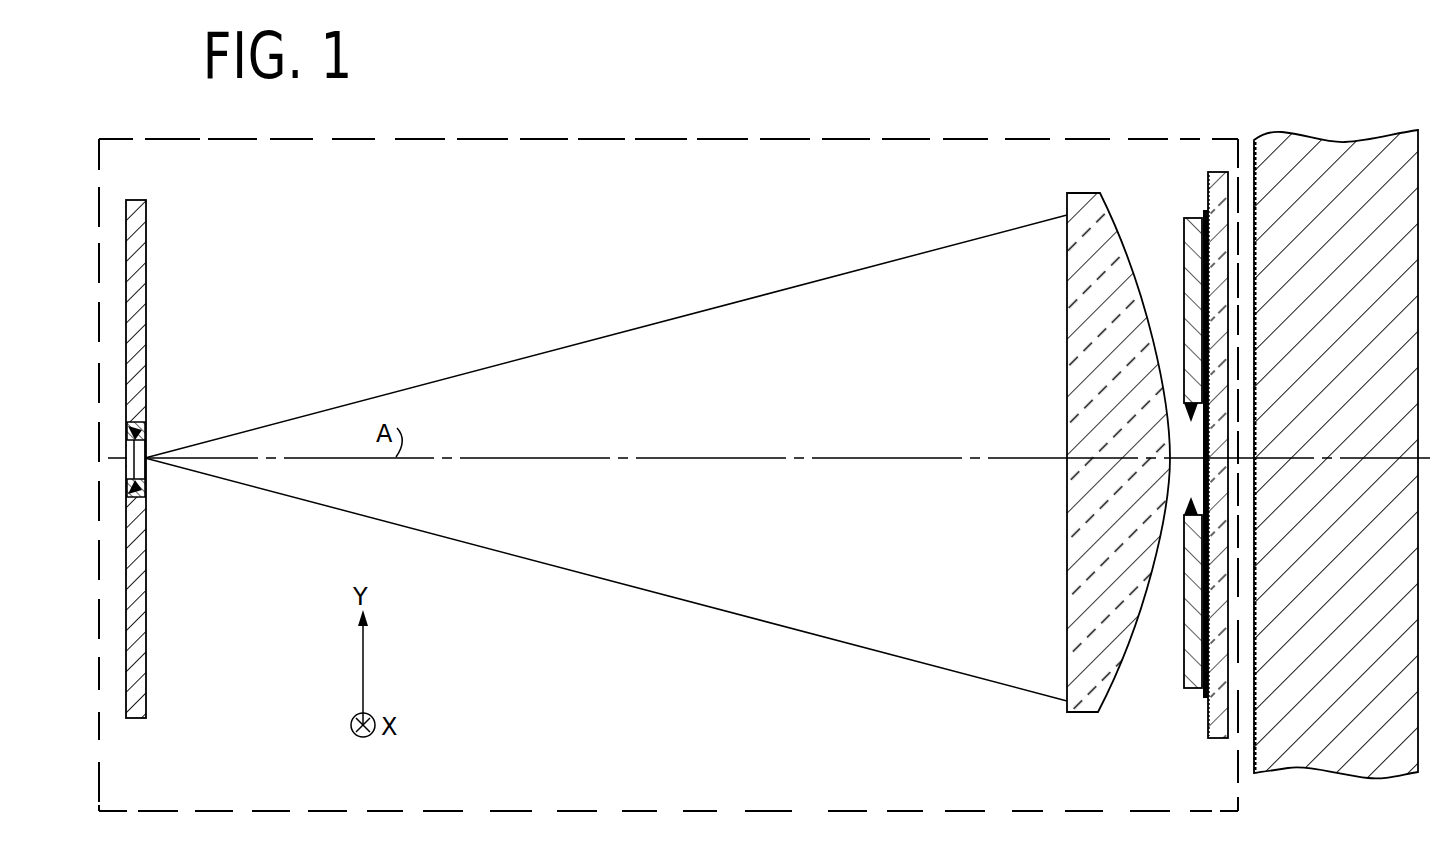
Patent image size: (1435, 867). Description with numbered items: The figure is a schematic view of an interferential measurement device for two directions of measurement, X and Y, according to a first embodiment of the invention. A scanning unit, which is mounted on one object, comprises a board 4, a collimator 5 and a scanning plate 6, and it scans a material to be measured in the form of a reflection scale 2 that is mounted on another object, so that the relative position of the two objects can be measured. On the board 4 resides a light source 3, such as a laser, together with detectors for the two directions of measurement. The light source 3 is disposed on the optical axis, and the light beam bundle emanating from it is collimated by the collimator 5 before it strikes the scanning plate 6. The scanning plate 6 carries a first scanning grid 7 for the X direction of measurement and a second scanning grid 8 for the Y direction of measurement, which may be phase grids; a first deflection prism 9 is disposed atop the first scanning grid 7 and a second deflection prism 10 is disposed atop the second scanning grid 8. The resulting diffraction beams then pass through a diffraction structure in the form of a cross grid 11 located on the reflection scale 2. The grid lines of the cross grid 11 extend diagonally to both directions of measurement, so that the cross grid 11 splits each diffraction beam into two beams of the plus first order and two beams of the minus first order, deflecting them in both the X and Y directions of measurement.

The reflection scale 2 is at (1283, 753).
The light source 3 is at (145, 458).
The board 4 is at (133, 690).
The collimator 5 is at (1085, 712).
The scanning plate 6 is at (1218, 722).
The first scanning grid 7 is at (1208, 444).
The second scanning grid 8 is at (1228, 345).
The first deflection prism 9 is at (1177, 422).
The second deflection prism 10 is at (1185, 230).
The cross grid 11 is at (1256, 236).